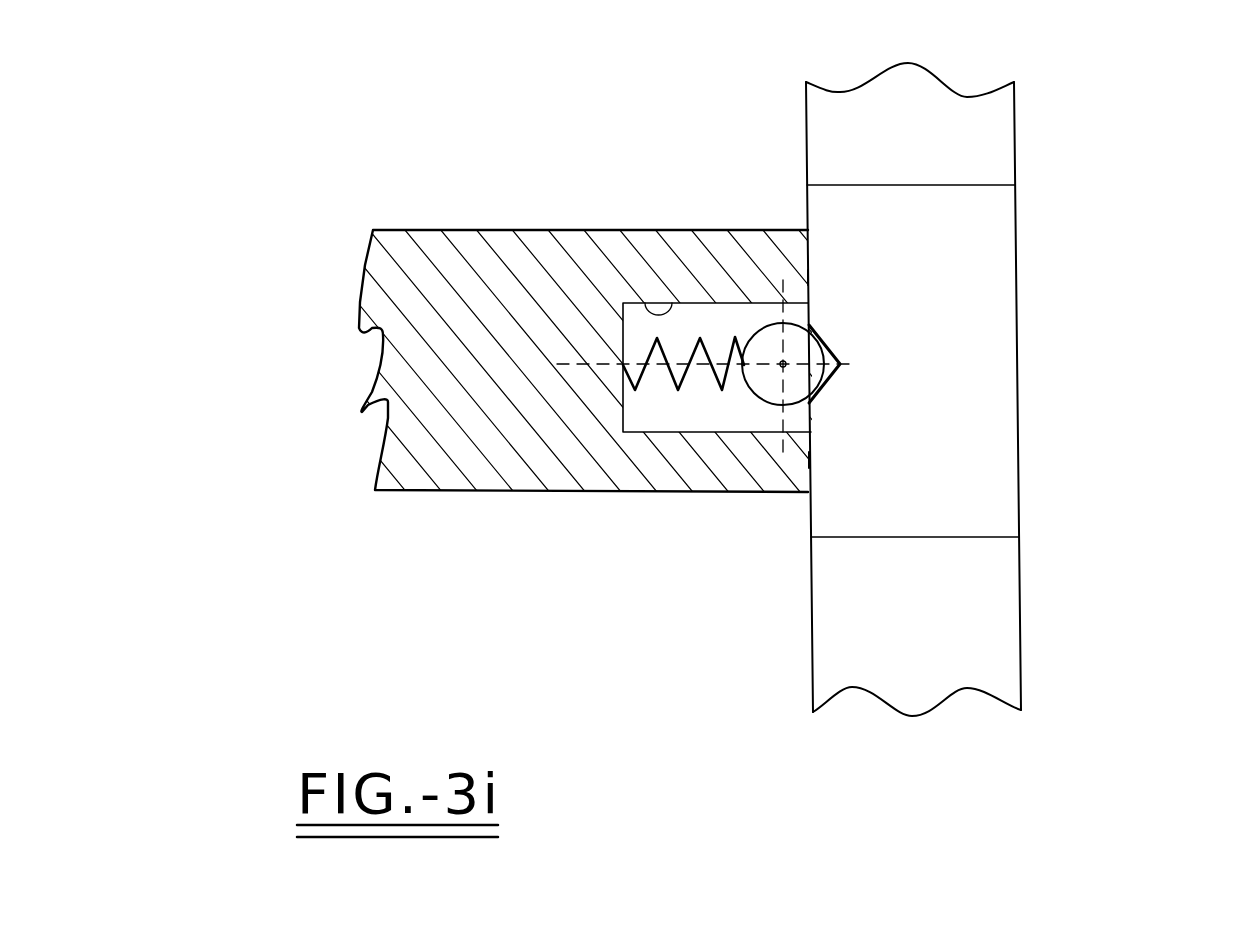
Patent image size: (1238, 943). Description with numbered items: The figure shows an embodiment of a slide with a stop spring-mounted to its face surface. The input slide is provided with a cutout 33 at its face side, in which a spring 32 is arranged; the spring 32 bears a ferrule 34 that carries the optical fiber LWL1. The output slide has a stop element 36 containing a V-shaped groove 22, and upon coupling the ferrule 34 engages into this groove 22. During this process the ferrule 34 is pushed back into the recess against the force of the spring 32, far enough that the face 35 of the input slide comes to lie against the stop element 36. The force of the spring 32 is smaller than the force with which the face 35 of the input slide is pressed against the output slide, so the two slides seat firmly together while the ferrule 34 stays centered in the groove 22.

The V-shaped groove 22 is at (840, 350).
The spring 32 is at (678, 392).
The cutout 33 is at (645, 303).
The ferrule 34 is at (767, 400).
The face 35 is at (811, 277).
The stop element 36 is at (1000, 428).
The optical fiber LWL1 is at (782, 361).